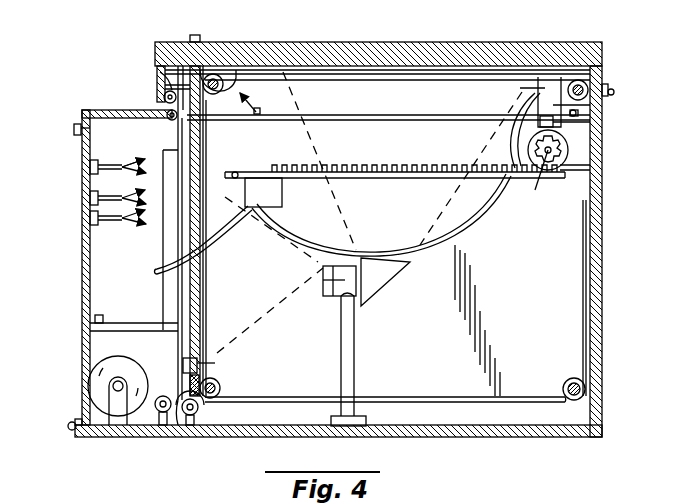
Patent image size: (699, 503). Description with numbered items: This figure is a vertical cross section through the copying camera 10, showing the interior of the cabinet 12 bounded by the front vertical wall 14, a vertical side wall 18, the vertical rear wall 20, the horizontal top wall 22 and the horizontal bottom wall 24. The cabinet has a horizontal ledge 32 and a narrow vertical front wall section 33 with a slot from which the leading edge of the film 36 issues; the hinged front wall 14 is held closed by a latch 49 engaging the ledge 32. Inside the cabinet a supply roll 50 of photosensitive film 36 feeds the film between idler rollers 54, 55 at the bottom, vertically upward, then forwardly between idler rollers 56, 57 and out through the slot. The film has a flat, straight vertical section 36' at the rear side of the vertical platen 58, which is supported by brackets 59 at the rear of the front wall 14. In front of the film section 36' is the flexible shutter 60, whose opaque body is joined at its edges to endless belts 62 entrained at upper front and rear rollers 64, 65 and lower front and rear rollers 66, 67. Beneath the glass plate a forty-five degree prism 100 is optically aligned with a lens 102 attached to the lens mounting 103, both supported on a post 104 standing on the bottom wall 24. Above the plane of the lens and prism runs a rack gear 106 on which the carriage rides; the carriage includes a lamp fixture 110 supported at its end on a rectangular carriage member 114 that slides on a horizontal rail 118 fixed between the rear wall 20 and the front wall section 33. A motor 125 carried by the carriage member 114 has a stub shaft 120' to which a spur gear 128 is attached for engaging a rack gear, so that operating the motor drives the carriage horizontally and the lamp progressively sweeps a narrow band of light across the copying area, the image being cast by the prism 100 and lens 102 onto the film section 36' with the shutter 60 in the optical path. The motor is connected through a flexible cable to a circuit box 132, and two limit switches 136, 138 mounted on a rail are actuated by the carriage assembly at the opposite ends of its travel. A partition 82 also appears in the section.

The apparatus 10 is at (612, 262).
The cabinet 12 is at (80, 367).
The front vertical wall 14 is at (92, 320).
The vertical side wall 18 is at (112, 282).
The vertical rear wall 20 is at (600, 283).
The horizontal top wall 22 is at (395, 48).
The horizontal bottom wall 24 is at (265, 436).
The horizontal ledge 32 is at (92, 120).
The narrow vertical front wall section 33 is at (162, 95).
The film strip or sheet 36 is at (132, 265).
The flat straight vertical film section 36' is at (192, 253).
The latch 49 is at (112, 110).
The supply roll 50 is at (100, 400).
The idler roller 54 is at (162, 428).
The idler roller 55 is at (205, 437).
The idler roller 56 is at (168, 121).
The idler roller 57 is at (160, 92).
The vertical platen 58 is at (172, 238).
The bracket 59 is at (90, 332).
The flexible shutter 60 is at (208, 288).
The endless belt 62 is at (412, 82).
The upper front roller 64 is at (218, 76).
The upper rear roller 65 is at (580, 84).
The lower front roller 66 is at (222, 380).
The lower rear roller 67 is at (566, 380).
The partition 82 is at (200, 148).
The 45° prism 100 is at (385, 282).
The lens 102 is at (322, 266).
The lens mounting 103 is at (322, 282).
The post 104 is at (355, 349).
The rack gear 106 is at (420, 180).
The lamp fixture 110 is at (530, 92).
The carriage member 114 is at (565, 105).
The horizontal rail 118 is at (410, 122).
The stub shaft 120' is at (535, 184).
The motor 125 is at (568, 150).
The spur gear 128 is at (562, 160).
The circuit box 132 is at (280, 194).
The limit switch 136 is at (258, 106).
The limit switch 138 is at (578, 115).